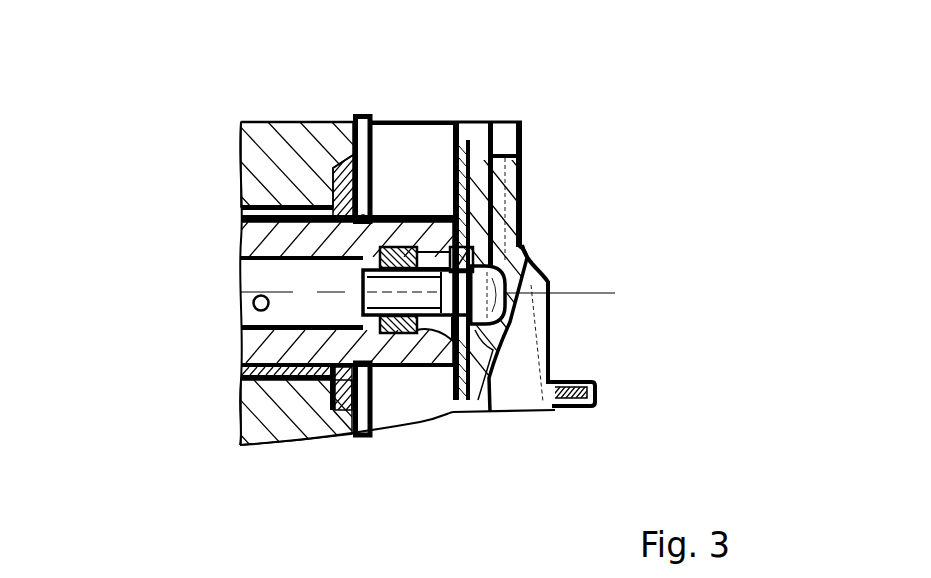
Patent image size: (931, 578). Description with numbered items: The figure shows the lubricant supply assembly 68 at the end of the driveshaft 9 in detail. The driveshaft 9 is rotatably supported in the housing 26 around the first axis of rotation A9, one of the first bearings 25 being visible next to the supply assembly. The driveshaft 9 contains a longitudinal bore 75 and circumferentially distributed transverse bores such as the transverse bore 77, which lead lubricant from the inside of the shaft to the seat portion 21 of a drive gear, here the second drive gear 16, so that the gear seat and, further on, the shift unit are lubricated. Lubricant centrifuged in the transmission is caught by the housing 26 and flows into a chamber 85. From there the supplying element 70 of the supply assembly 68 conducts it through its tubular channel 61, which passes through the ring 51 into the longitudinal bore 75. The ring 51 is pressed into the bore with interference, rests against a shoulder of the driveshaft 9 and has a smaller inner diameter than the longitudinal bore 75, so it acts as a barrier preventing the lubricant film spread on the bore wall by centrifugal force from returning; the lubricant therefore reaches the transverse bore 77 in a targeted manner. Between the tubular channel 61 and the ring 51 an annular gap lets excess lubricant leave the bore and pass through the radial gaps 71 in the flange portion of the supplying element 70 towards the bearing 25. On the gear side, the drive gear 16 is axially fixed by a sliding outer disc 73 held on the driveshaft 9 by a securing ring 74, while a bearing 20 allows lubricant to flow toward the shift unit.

The driveshaft 9 is at (243, 347).
The second drive gear 16 is at (302, 143).
The bearing 20 is at (270, 383).
The seat portion 21 is at (260, 150).
The first bearing 25 is at (413, 158).
The housing 26 is at (493, 365).
The ring 51 is at (405, 333).
The tubular channel 61 is at (442, 330).
The supply assembly 68 is at (560, 402).
The supplying element 70 is at (518, 230).
The radial gap 71 is at (462, 183).
The first outer disc 73 is at (348, 410).
The securing ring 74 is at (368, 130).
The longitudinal bore 75 is at (240, 267).
The transverse bore 77 is at (245, 311).
The chamber 85 is at (503, 282).
The first axis of rotation A9 is at (603, 293).